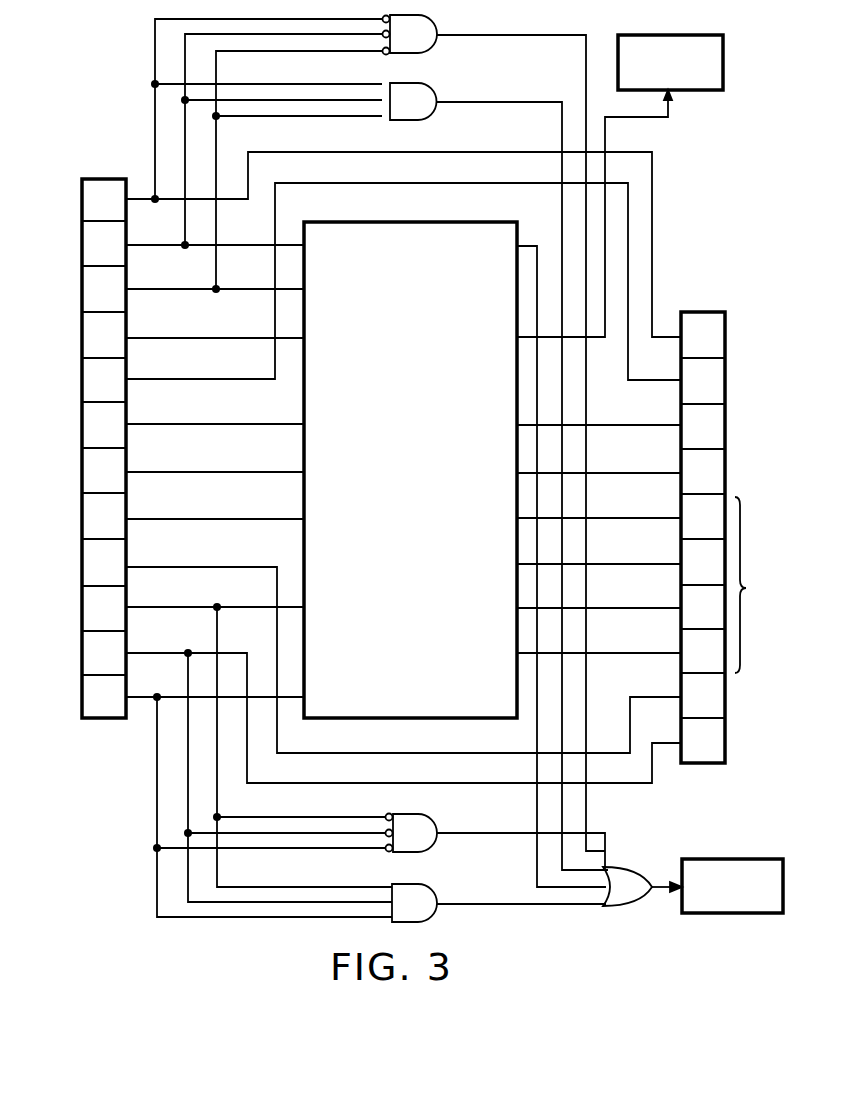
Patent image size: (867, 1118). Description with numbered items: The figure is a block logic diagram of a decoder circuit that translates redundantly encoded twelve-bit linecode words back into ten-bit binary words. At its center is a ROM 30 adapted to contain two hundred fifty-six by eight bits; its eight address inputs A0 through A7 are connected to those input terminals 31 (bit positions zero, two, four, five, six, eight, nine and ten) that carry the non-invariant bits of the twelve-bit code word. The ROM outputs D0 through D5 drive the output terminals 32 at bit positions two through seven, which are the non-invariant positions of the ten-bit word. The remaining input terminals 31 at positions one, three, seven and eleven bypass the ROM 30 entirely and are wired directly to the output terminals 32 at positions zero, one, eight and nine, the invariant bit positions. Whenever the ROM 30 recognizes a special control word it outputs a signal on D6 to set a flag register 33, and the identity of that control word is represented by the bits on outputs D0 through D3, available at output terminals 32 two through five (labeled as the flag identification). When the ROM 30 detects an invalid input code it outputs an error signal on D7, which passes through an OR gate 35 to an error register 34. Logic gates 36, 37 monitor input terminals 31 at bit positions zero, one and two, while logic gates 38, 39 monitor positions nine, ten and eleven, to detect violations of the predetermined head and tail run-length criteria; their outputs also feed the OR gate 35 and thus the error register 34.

The ROM 30 is at (404, 591).
The input terminals 31 is at (82, 433).
The output terminals 32 is at (725, 410).
The flag register 33 is at (723, 80).
The error register 34 is at (723, 858).
The OR gate 35 is at (635, 868).
The logic gate 36 is at (440, 888).
The logic gate 37 is at (440, 822).
The logic gate 38 is at (430, 118).
The logic gate 39 is at (430, 50).